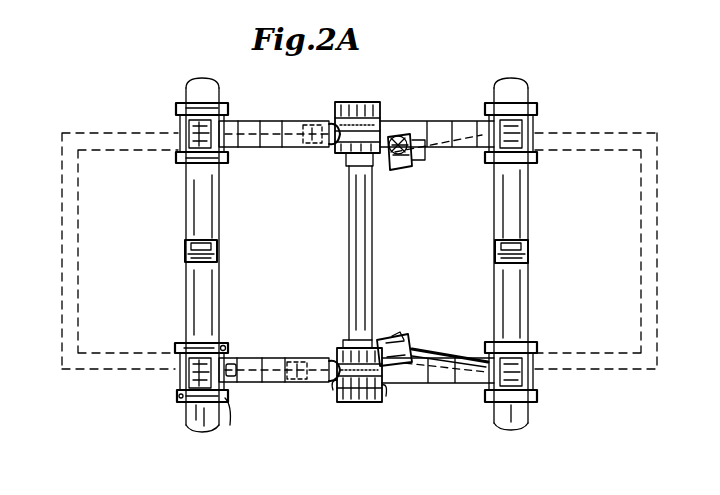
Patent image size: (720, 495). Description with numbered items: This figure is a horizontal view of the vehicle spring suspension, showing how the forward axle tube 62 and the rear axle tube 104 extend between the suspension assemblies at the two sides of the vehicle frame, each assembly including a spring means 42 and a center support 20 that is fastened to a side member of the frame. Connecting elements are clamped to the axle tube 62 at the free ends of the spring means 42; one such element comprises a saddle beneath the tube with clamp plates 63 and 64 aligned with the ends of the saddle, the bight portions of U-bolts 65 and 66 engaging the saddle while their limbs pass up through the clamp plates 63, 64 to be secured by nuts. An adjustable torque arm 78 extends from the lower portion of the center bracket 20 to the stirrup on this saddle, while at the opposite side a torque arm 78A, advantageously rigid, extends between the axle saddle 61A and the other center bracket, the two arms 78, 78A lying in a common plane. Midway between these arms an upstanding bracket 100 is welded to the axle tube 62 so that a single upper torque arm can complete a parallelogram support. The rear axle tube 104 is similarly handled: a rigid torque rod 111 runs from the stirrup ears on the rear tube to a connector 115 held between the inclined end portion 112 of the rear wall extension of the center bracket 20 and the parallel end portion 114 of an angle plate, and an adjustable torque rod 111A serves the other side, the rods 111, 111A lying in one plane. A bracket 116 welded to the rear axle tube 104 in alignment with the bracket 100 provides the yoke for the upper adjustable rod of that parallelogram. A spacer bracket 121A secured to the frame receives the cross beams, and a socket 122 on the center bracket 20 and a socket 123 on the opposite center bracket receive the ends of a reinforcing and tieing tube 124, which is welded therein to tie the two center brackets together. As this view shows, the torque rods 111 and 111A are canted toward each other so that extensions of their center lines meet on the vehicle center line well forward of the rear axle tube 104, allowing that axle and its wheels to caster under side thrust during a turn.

The center support 20 is at (356, 402).
The spring means 42 is at (241, 118).
The axle saddle 61A is at (184, 165).
The axle tube 62 is at (188, 291).
The clamp plate 63 is at (186, 398).
The clamp plate 64 is at (196, 344).
The U-bolt 65 is at (226, 346).
The U-bolt 66 is at (230, 404).
The adjustable torque arm 78 is at (279, 386).
The torque arm 78A is at (287, 130).
The upstanding bracket 100 is at (183, 246).
The rear axle tube 104 is at (513, 304).
The rigid torque rod 111 is at (416, 350).
The adjustable torque rod 111A is at (436, 152).
The free end portion 112 is at (386, 388).
The end portion 114 is at (388, 340).
The connector 115 is at (420, 346).
The bracket 116 is at (530, 244).
The spacer bracket 121A is at (366, 132).
The socket 122 is at (362, 340).
The socket 123 is at (350, 166).
The reinforcing and tieing tube 124 is at (372, 248).